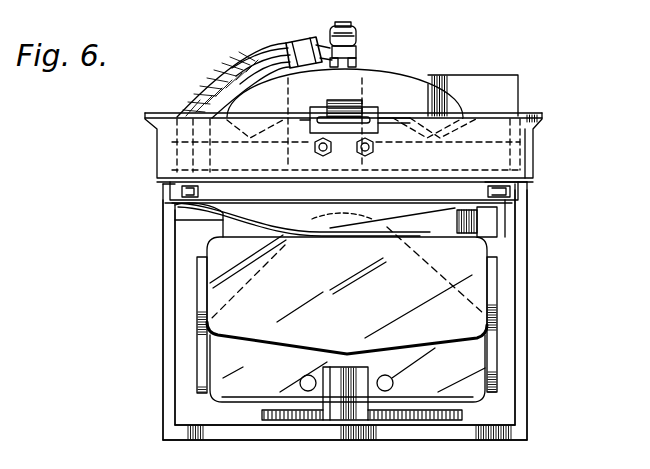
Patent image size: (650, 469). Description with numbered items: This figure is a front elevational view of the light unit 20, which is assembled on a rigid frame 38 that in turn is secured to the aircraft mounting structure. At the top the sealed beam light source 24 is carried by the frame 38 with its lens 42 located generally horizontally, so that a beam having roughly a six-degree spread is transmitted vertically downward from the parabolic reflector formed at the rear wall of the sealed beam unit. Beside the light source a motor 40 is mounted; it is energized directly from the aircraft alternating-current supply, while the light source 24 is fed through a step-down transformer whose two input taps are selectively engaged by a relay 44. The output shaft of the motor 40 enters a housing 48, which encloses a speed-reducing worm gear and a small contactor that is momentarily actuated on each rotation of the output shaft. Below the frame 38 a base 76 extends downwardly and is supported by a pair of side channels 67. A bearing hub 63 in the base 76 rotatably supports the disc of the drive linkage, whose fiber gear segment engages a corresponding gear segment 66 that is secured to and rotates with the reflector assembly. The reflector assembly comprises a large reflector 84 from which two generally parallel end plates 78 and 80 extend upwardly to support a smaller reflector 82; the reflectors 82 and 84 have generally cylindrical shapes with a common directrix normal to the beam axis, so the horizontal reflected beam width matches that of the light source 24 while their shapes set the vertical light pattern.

The light unit 20 is at (137, 165).
The sealed beam light source 24 is at (413, 93).
The rigid frame 38 is at (533, 146).
The motor 40 is at (472, 230).
The lens 42 is at (230, 97).
The relay 44 is at (177, 220).
The housing 48 is at (518, 87).
The bearing hub 63 is at (338, 403).
The gear segment 66 is at (422, 418).
The side channels 67 is at (165, 342).
The base 76 is at (253, 433).
The end plate 78 is at (200, 380).
The end plate 80 is at (495, 297).
The smaller reflector 82 is at (472, 270).
The large reflector 84 is at (472, 363).